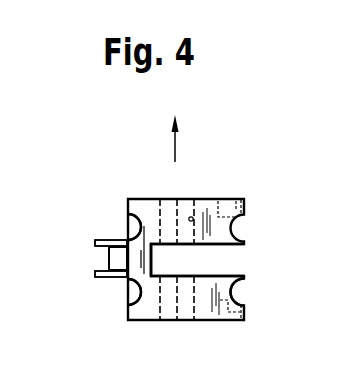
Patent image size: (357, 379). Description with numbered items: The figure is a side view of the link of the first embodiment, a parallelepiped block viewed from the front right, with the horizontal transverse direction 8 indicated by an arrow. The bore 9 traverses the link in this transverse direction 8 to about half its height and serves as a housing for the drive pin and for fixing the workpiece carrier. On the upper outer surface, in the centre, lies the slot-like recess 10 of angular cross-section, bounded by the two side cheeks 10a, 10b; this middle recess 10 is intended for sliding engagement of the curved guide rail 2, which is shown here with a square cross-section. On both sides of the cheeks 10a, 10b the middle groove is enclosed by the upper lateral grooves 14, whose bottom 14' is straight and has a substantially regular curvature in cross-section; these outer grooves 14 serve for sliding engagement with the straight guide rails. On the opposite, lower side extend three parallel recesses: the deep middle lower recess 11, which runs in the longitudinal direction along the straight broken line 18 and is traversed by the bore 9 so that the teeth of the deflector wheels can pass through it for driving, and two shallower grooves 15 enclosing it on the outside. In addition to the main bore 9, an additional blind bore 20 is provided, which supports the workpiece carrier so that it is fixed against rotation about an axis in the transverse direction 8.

The curved guide rail 2 is at (118, 260).
The transverse direction 8 is at (173, 142).
The bore 9 is at (192, 221).
The slot-like recess 10 is at (108, 250).
The side cheek 10a is at (100, 277).
The side cheek 10b is at (102, 240).
The lower recess 11 is at (208, 256).
The upper lateral groove 14 is at (142, 197).
The bottom of lateral groove 14' is at (153, 327).
The shallower groove 15 is at (240, 293).
The broken line 18 is at (153, 247).
The blind bore 20 is at (228, 308).